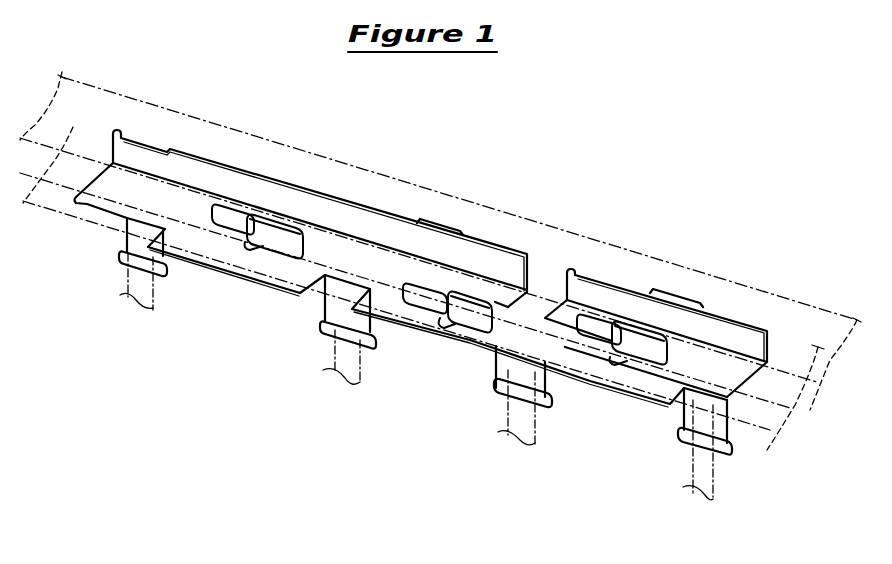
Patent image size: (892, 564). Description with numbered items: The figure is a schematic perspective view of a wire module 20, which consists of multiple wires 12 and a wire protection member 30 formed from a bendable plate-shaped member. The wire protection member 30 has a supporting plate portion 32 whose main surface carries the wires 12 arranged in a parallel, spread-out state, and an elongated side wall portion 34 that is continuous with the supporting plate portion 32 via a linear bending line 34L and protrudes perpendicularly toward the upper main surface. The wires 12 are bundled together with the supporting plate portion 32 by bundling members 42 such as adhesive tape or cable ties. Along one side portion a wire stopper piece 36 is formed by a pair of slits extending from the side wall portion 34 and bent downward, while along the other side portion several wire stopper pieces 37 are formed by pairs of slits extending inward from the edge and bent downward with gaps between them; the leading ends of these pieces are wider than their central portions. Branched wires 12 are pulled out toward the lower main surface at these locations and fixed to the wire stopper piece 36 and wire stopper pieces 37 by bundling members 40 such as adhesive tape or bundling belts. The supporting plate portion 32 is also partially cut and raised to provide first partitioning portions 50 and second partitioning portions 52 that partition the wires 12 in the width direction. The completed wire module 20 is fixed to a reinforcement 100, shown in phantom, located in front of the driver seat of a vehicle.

The reinforcement 100 is at (808, 303).
The wires 12 is at (760, 400).
The wire module 20 is at (407, 313).
The wire protection member 30 is at (594, 277).
The supporting plate portion 32 is at (277, 290).
The side wall portion 34 is at (368, 206).
The bending line 34L is at (316, 222).
The wire stopper piece 36 is at (496, 390).
The wire stopper pieces 37 is at (728, 452).
The bundling member 40 is at (407, 377).
The bundling members 42 is at (703, 310).
The first partitioning portions 50 is at (603, 315).
The second partitioning portions 52 is at (640, 337).